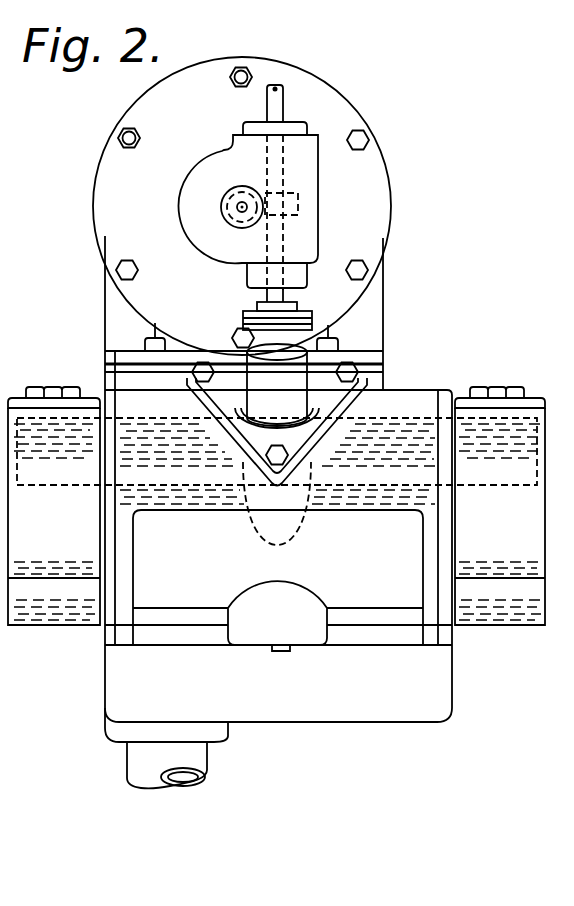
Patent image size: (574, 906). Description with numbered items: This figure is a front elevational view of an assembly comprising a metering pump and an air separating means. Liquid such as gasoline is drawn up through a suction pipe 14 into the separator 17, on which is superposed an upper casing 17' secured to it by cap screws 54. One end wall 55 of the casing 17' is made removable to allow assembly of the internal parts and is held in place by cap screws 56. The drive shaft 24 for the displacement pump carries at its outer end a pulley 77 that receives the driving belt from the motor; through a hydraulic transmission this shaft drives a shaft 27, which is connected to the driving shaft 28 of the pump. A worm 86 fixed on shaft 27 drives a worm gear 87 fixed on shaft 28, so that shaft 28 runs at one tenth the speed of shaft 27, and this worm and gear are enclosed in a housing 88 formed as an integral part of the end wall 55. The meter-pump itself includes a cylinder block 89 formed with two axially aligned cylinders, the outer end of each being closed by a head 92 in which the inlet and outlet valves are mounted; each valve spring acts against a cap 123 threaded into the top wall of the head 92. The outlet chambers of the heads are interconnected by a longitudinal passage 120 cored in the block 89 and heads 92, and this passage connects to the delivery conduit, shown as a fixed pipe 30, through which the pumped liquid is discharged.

The suction pipe 14 is at (193, 765).
The separator 17 is at (278, 547).
The upper casing 17' is at (268, 313).
The shaft 24 is at (9, 206).
The shaft 27 is at (228, 205).
The driving shaft 28 is at (280, 97).
The fixed pipe 30 is at (277, 415).
The cap screws 54 is at (344, 347).
The end wall 55 is at (386, 218).
The cap screws 56 is at (236, 80).
The pulley 77 is at (9, 246).
The worm 86 is at (234, 224).
The worm gear 87 is at (298, 207).
The housing 88 is at (312, 182).
The cylinder block 89 is at (278, 553).
The head 92 is at (62, 614).
The longitudinal passage 120 is at (410, 416).
The cap 123 is at (58, 377).